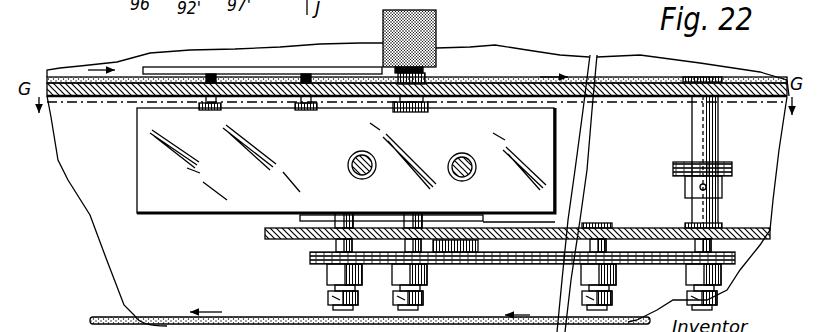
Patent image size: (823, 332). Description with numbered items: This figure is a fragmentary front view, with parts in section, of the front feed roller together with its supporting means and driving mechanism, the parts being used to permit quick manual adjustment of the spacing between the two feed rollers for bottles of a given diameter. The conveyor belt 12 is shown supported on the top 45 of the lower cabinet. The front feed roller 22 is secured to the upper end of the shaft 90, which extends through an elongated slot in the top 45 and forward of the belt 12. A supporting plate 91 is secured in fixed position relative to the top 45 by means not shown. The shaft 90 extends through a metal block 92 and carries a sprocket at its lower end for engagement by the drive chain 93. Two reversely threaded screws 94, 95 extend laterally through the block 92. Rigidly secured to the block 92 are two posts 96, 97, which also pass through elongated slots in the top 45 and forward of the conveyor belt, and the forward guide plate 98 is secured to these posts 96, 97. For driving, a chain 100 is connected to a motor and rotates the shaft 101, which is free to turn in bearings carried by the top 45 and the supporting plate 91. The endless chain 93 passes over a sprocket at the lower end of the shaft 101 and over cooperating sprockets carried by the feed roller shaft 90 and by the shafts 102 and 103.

The conveyor belt 12 is at (88, 78).
The front feed roller 22 is at (427, 36).
The top 45 is at (127, 97).
The shaft 90 is at (427, 73).
The supporting plate 91 is at (657, 236).
The metal block 92 is at (250, 214).
The drive chain 93 is at (517, 265).
The reversely threaded screw 94 is at (352, 167).
The reversely threaded screw 95 is at (473, 150).
The post 96 is at (212, 110).
The post 97 is at (300, 110).
The forward guide plate 98 is at (263, 67).
The chain 100 is at (674, 167).
The shaft 101 is at (713, 153).
The shaft 102 is at (335, 246).
The shaft 103 is at (604, 219).